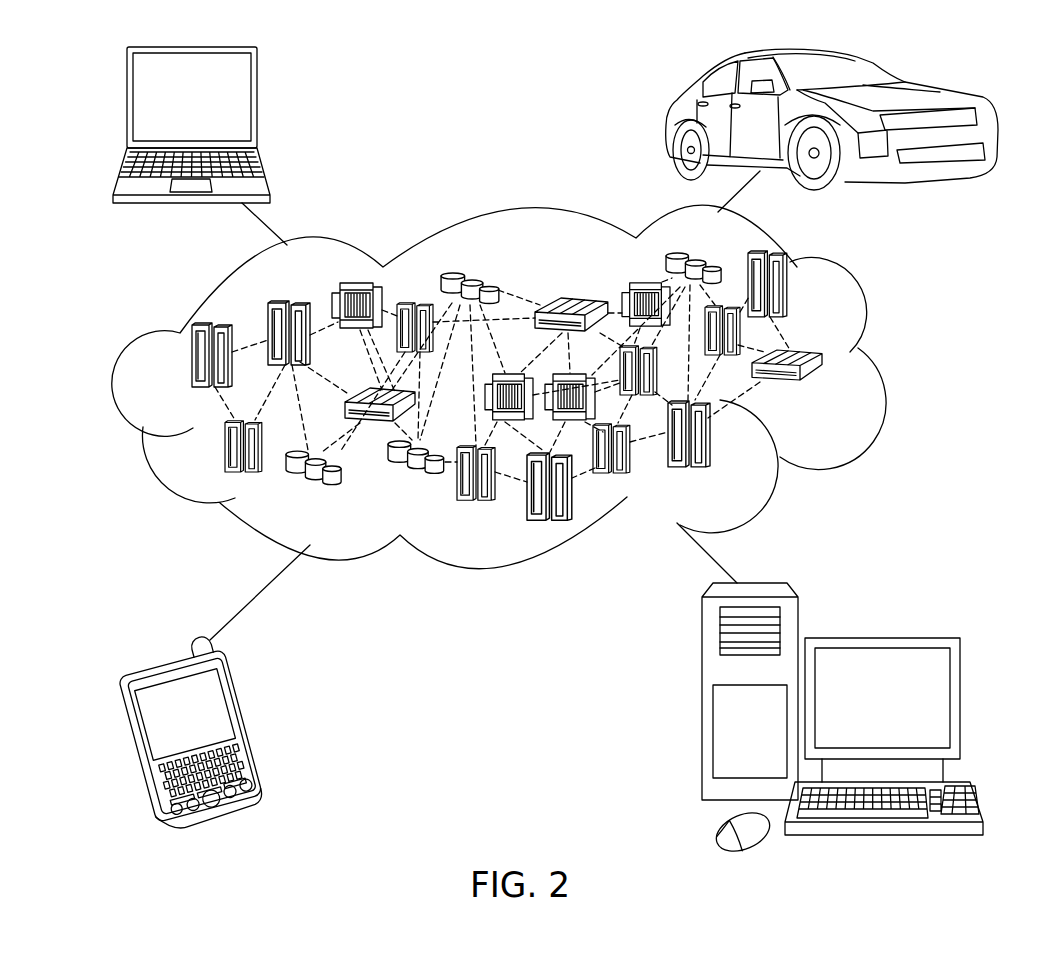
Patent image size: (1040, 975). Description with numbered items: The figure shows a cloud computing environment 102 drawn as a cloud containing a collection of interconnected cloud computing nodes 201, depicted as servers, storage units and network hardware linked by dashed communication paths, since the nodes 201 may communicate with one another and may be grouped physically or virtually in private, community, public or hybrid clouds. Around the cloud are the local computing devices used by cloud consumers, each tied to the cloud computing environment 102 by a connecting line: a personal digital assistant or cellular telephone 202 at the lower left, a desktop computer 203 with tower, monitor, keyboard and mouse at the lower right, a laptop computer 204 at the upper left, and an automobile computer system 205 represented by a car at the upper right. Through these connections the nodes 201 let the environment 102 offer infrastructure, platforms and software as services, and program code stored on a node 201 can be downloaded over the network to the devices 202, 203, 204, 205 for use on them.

The cloud computing environment 102 is at (880, 362).
The cloud computing nodes 201 is at (828, 395).
The personal digital assistant or cellular telephone 202 is at (248, 728).
The desktop computer 203 is at (880, 638).
The laptop computer 204 is at (257, 104).
The automobile computer system 205 is at (668, 120).